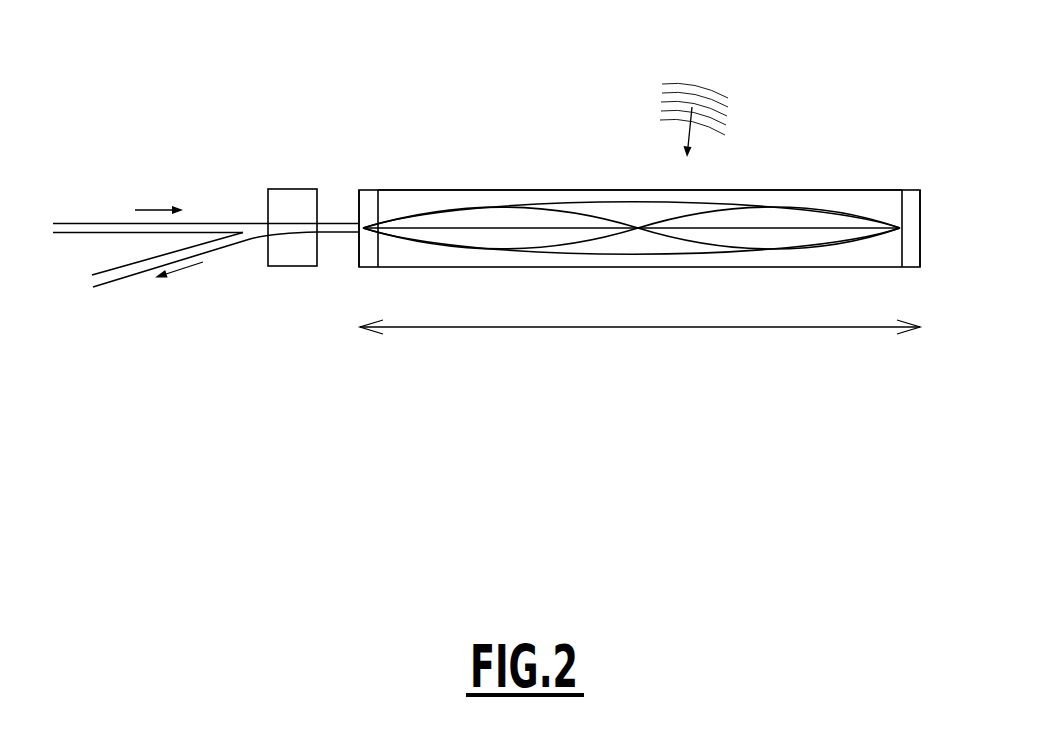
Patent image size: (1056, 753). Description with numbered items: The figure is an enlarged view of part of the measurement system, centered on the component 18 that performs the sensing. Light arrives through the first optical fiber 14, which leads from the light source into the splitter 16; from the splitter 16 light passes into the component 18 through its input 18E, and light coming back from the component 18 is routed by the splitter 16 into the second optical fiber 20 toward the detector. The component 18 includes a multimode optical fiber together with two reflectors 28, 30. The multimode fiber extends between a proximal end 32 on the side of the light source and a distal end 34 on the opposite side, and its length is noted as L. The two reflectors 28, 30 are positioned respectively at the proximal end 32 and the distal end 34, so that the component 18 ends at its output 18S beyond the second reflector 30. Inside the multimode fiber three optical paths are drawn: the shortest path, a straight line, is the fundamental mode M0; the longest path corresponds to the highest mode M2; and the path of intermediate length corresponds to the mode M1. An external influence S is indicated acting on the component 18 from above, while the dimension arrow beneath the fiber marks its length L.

The first optical fiber 14 is at (83, 210).
The splitter 16 is at (283, 262).
The component 18 is at (819, 73).
The input 18E is at (348, 185).
The output 18S is at (923, 172).
The second optical fiber 20 is at (120, 290).
The reflector 28 is at (357, 260).
The reflector 30 is at (913, 245).
The proximal end 32 is at (397, 168).
The distal end 34 is at (891, 168).
The fundamental mode M0 is at (492, 232).
The mode M1 is at (598, 240).
The highest mode M2 is at (592, 200).
The external stimulus S is at (685, 120).
The length L is at (648, 329).